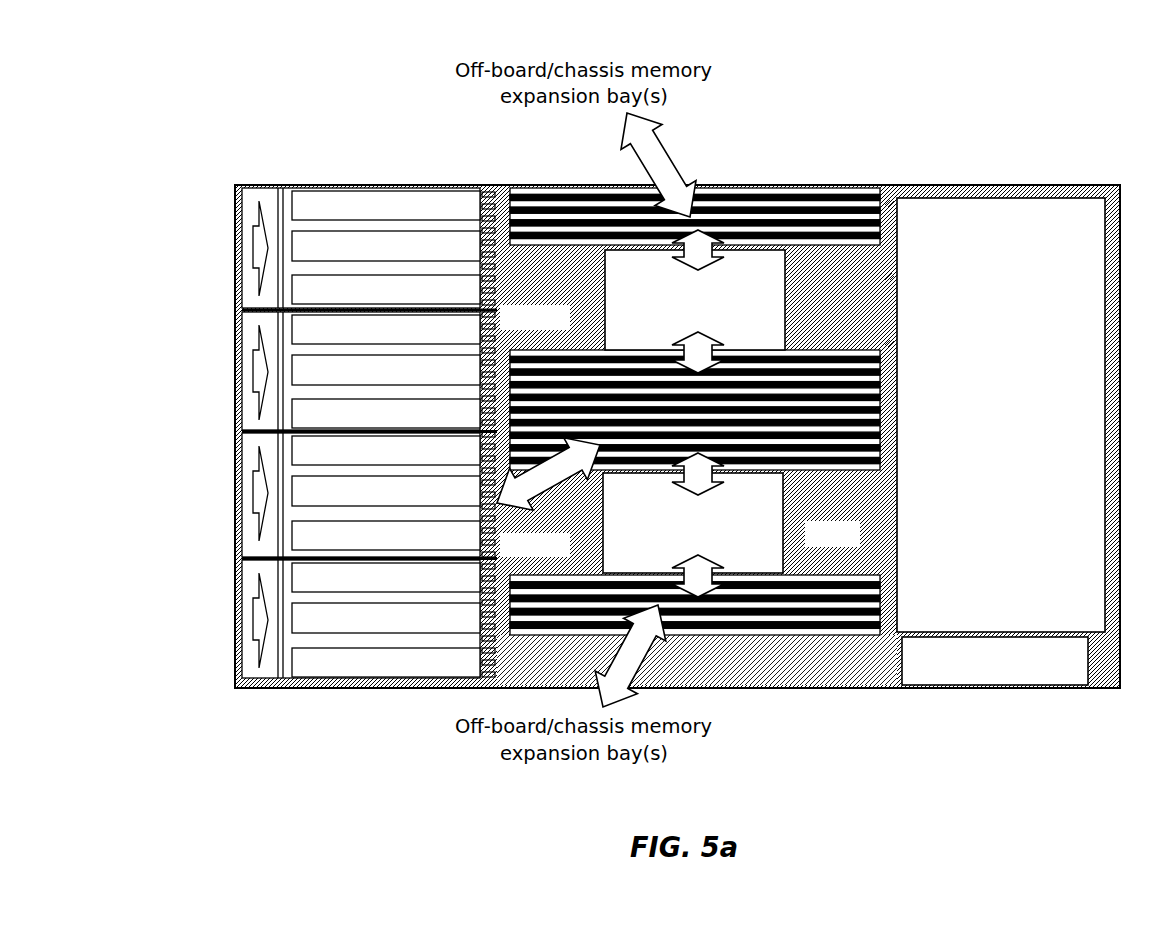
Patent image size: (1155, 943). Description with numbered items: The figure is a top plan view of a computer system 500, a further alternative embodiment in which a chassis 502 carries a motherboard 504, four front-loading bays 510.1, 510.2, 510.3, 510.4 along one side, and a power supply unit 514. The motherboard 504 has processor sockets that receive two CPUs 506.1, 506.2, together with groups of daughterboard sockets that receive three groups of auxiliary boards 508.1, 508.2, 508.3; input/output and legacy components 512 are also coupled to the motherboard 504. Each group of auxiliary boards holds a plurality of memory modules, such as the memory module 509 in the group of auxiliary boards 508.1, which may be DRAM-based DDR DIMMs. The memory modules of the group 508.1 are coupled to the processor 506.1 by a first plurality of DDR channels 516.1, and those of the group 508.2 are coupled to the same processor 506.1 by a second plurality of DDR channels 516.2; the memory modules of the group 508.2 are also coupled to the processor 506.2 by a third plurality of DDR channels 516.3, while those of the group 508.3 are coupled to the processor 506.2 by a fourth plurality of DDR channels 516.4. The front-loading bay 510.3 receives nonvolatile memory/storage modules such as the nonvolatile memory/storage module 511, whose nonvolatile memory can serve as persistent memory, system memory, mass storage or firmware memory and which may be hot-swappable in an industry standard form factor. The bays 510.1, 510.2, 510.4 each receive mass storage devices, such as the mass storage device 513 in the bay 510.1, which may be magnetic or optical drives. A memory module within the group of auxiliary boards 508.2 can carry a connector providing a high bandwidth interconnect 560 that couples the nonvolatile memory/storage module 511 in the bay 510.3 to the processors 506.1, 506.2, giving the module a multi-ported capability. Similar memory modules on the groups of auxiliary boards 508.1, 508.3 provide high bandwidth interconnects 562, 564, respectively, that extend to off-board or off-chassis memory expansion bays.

The computer system 500 is at (631, 375).
The chassis 502 is at (875, 685).
The motherboard 504 is at (850, 544).
The CPU 506.1 is at (723, 323).
The CPU 506.2 is at (723, 546).
The group of auxiliary boards 508.1 is at (675, 191).
The group of auxiliary boards 508.2 is at (602, 348).
The group of auxiliary boards 508.3 is at (600, 572).
The memory module 509 is at (815, 187).
The front-loading bay 510.1 is at (316, 215).
The front-loading bay 510.2 is at (218, 378).
The front-loading bay 510.3 is at (315, 495).
The front-loading bay 510.4 is at (218, 630).
The nonvolatile memory/storage module 511 is at (290, 522).
The input/output (I/O) and legacy components 512 is at (1017, 450).
The mass storage device 513 is at (360, 185).
The power supply unit (PSU) 514 is at (1040, 670).
The DDR channels 516.1 is at (683, 255).
The DDR channels 516.2 is at (712, 347).
The DDR channels 516.3 is at (684, 478).
The DDR channels 516.4 is at (712, 570).
The high bandwidth interconnect 560 is at (548, 474).
The high bandwidth interconnect 562 is at (658, 165).
The high bandwidth interconnect 564 is at (630, 656).